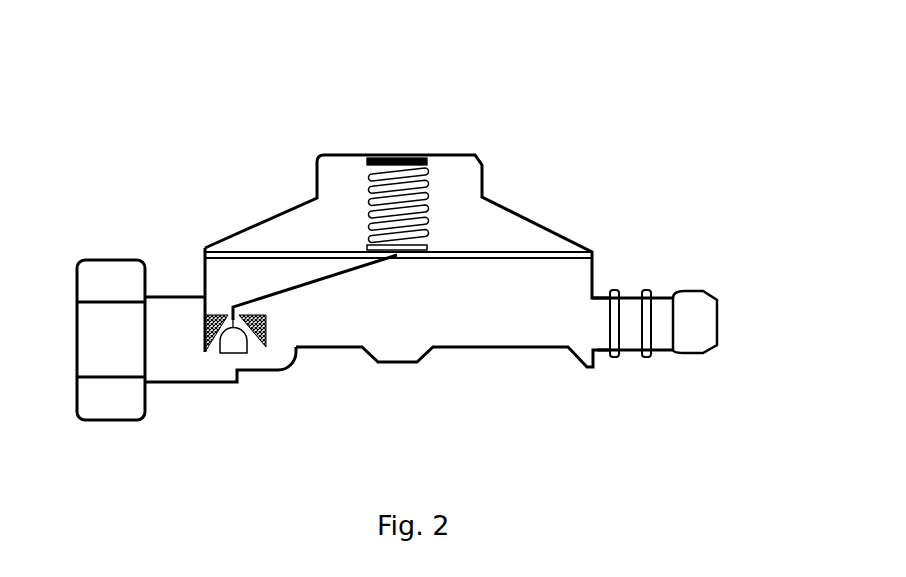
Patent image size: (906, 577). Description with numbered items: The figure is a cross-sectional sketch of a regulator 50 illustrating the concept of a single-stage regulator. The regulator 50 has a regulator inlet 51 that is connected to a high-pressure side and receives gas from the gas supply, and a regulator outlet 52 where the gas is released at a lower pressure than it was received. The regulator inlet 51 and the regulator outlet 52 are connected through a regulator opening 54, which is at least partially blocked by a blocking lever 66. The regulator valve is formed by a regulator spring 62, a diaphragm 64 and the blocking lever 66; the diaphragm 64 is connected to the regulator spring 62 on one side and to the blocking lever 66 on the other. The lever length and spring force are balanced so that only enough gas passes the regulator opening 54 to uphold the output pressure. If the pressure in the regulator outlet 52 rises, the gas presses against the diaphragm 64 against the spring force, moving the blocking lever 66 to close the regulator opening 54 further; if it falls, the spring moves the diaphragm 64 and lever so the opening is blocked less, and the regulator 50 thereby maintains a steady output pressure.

The regulator 50 is at (541, 109).
The regulator inlet 51 is at (170, 322).
The regulator outlet 52 is at (600, 327).
The regulator opening 54 is at (227, 317).
The regulator spring 62 is at (390, 195).
The diaphragm 64 is at (543, 253).
The blocking lever 66 is at (298, 287).